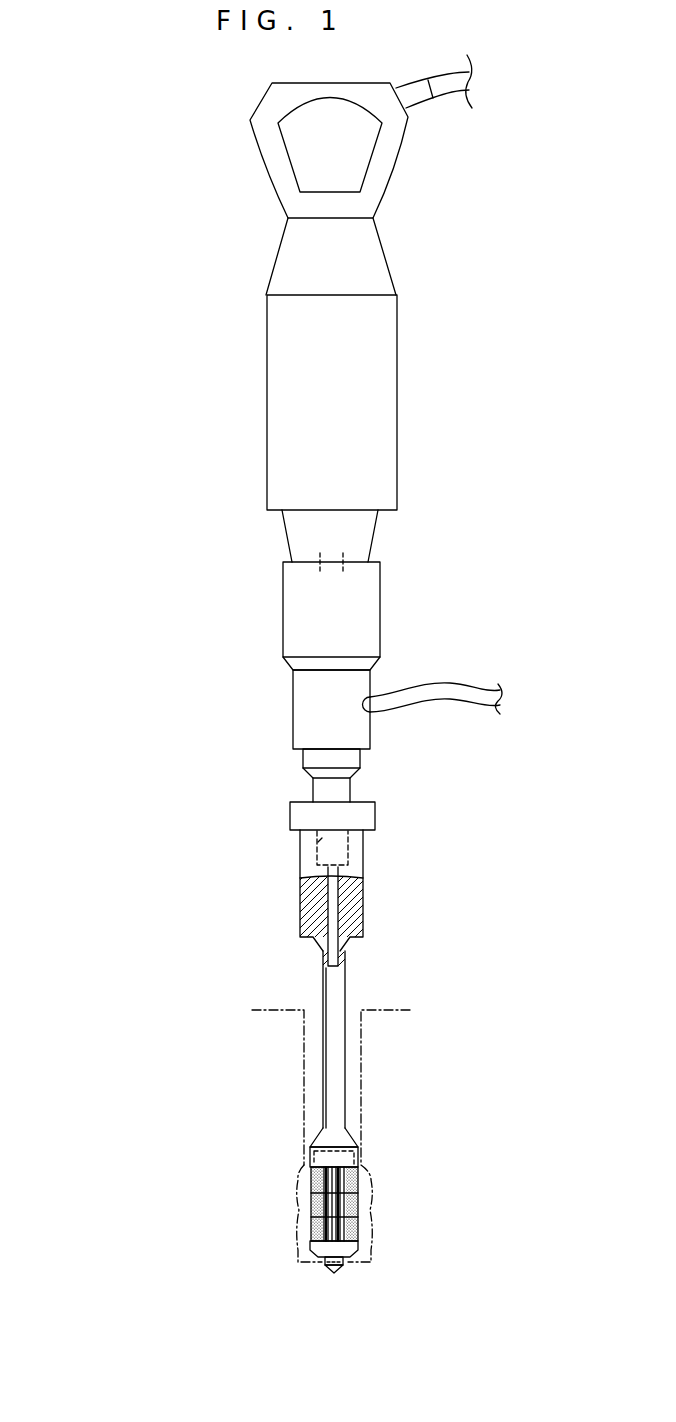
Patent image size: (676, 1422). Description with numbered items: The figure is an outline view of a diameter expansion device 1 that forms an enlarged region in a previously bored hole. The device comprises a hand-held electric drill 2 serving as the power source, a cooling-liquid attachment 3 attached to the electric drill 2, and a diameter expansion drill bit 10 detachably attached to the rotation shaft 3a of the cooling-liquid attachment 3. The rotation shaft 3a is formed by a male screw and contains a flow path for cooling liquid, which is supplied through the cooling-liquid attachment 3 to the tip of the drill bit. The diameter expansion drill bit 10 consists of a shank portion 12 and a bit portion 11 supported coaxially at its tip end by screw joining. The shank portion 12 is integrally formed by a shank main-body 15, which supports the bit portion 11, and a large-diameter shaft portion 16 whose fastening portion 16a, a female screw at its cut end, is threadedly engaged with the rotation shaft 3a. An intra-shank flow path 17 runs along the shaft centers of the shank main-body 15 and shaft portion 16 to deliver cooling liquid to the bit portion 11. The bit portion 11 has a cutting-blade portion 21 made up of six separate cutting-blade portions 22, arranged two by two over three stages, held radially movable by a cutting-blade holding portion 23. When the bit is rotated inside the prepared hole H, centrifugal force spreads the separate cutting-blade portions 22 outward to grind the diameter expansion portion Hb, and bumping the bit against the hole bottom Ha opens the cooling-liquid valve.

The diameter expansion device 1 is at (107, 312).
The hand-held electric drill 2 is at (183, 85).
The cooling-liquid attachment 3 is at (183, 567).
The rotation shaft 3a is at (306, 841).
The diameter expansion drill bit 10 is at (179, 832).
The bit portion 11 is at (436, 1199).
The shank portion 12 is at (266, 884).
The shank main-body 15 is at (332, 983).
The large-diameter shaft portion 16 is at (300, 925).
The fastening portion 16a is at (340, 850).
The intra-shank flow path 17 is at (332, 946).
The cutting-blade portion 21 is at (396, 1176).
The separate cutting-blade portions 22 is at (358, 1226).
The cutting-blade holding portion 23 is at (363, 1128).
The prepared hole H is at (303, 1060).
The hole bottom Ha is at (322, 1263).
The diameter expansion portion Hb is at (300, 1210).